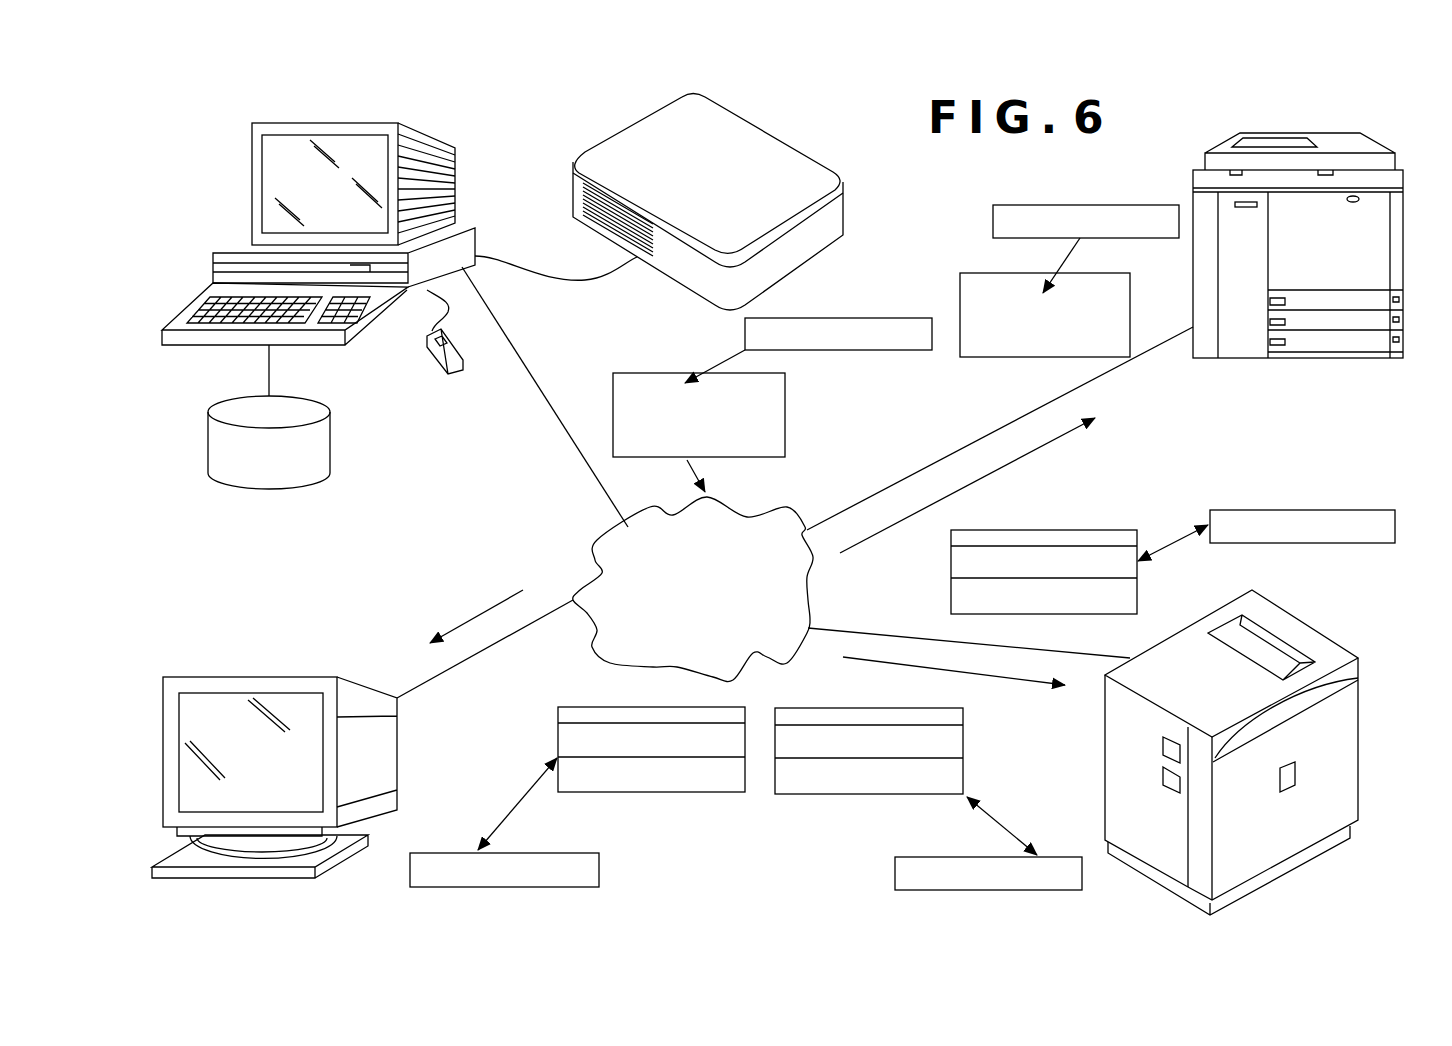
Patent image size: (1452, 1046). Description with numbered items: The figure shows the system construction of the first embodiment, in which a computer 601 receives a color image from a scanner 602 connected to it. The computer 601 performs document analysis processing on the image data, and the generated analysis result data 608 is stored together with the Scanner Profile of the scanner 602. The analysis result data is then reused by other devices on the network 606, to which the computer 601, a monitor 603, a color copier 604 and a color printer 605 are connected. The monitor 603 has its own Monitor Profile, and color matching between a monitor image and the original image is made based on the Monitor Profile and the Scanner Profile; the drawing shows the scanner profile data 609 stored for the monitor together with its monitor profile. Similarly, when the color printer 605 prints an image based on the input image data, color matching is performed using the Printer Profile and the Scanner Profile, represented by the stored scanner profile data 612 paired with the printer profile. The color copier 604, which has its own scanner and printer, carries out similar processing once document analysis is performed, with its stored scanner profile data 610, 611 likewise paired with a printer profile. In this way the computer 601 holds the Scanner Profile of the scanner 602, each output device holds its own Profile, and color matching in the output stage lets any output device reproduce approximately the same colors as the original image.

The computer 601 is at (423, 133).
The scanner 602 is at (780, 142).
The monitor 603 is at (260, 677).
The color copier 604 is at (1208, 152).
The color printer 605 is at (1313, 627).
The network 606 is at (808, 600).
The analysis result data 608 is at (785, 425).
The profile storage of monitor 609 is at (660, 792).
The profile storage of printer 610 is at (980, 273).
The profile storage of printer 611 is at (1077, 530).
The profile storage of printer 612 is at (963, 765).